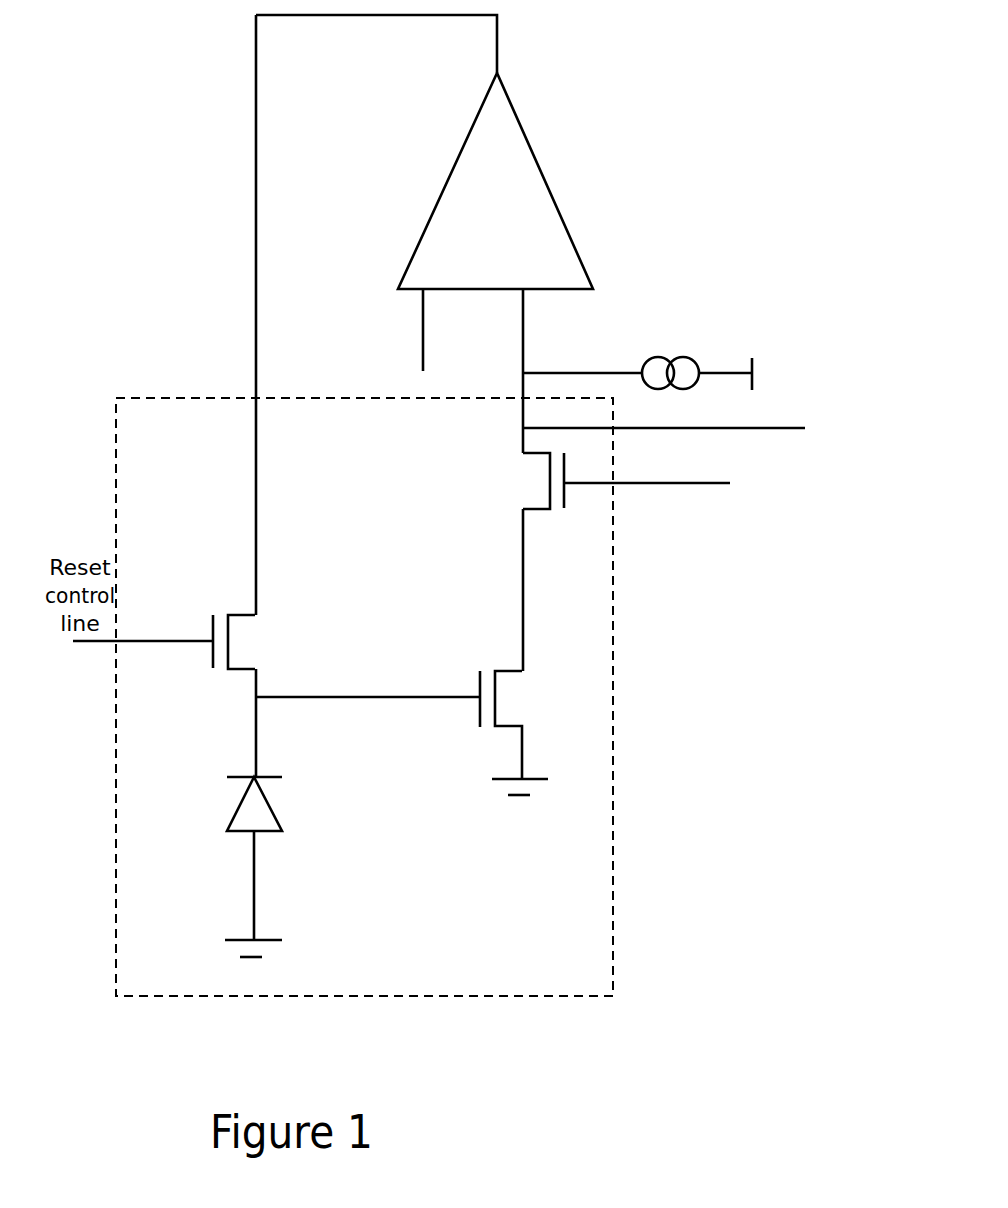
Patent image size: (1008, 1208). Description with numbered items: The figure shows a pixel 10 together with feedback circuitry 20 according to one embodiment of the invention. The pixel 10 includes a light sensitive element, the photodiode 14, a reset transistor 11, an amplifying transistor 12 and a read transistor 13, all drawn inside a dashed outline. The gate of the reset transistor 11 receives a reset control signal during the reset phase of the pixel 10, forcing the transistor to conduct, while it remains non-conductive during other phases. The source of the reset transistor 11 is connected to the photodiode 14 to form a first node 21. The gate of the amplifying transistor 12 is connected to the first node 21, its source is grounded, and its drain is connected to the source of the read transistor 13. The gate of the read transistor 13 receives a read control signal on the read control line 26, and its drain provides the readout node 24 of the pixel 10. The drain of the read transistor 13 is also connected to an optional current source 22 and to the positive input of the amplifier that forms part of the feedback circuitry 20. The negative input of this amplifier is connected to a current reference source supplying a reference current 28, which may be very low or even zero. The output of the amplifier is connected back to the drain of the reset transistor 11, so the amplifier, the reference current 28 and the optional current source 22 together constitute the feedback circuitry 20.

The pixel 10 is at (364, 697).
The reset transistor M1 11 is at (175, 642).
The amplifying transistor M2 12 is at (514, 733).
The read transistor M3 13 is at (524, 481).
The photodiode D1 14 is at (300, 867).
The feedback circuitry 20 is at (495, 221).
The first node 21 is at (250, 697).
The current source 22 is at (637, 361).
The readout node 24 is at (710, 428).
The read control line 26 is at (703, 496).
The reference current Iref 28 is at (389, 375).